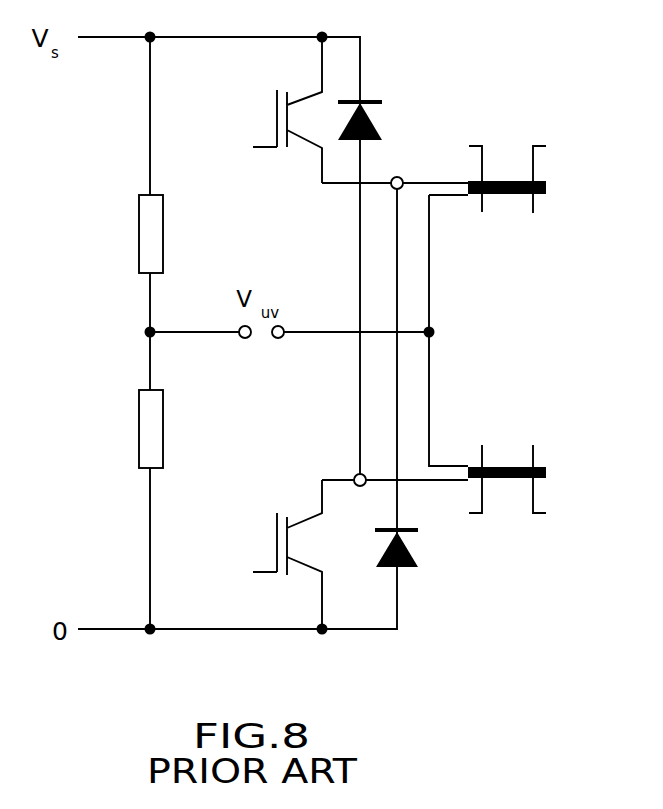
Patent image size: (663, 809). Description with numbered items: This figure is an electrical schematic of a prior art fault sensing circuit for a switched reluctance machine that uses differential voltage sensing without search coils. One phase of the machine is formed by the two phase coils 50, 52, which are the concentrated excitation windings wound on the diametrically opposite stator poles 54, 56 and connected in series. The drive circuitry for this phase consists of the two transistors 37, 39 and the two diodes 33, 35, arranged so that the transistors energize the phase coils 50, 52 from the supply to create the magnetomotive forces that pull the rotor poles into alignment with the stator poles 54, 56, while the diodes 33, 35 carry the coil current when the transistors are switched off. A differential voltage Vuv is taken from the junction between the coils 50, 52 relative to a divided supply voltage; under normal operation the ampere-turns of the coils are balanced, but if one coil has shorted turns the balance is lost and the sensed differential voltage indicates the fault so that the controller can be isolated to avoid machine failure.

The diode 33 is at (407, 568).
The diode 35 is at (377, 125).
The transistor 37 is at (277, 122).
The transistor 39 is at (277, 547).
The phase coil 50 is at (540, 195).
The phase coil 52 is at (546, 467).
The stator pole 54 is at (533, 213).
The stator pole 56 is at (533, 445).